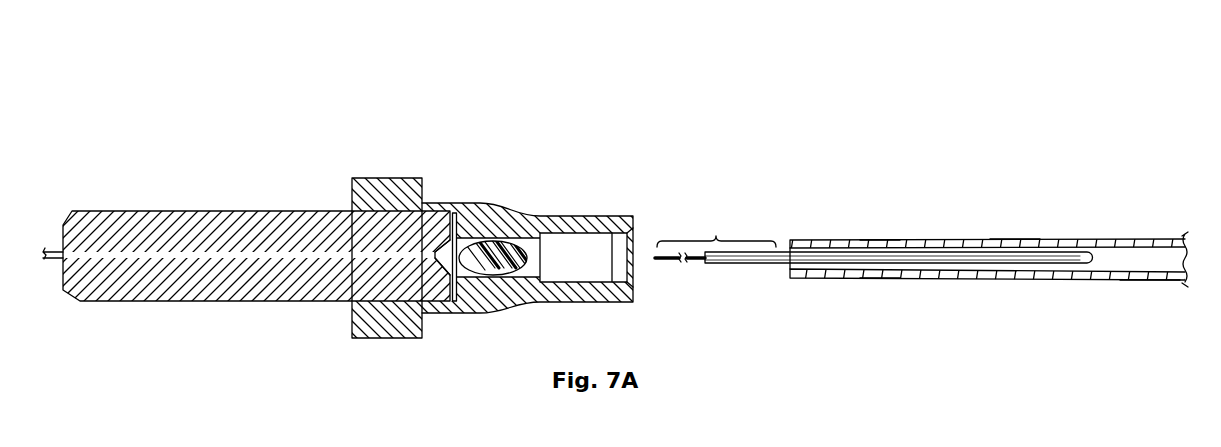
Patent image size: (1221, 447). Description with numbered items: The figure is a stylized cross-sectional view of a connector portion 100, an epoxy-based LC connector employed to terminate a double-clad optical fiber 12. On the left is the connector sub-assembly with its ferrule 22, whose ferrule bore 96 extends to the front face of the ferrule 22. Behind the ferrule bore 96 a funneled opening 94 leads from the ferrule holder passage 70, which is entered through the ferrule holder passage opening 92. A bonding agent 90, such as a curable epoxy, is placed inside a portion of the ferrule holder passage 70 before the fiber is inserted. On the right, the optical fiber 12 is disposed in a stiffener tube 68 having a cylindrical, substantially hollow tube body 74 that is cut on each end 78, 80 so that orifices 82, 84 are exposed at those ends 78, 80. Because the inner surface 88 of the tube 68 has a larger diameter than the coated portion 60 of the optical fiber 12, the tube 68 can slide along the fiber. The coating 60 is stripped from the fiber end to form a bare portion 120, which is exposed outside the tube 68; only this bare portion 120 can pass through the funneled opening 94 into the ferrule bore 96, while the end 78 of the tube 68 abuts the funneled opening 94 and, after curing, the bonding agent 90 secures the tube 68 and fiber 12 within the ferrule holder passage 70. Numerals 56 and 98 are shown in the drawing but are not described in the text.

The connector portion 100 is at (1114, 140).
The double-clad fiber 12 is at (993, 310).
The ferrule 22 is at (167, 293).
The housing 56 is at (480, 202).
The coated portion 60 is at (727, 265).
The tube 68 is at (876, 233).
The ferrule holder passage 70 is at (525, 242).
The tube body 74 is at (876, 288).
The end 78 is at (793, 288).
The end 80 is at (1151, 298).
The orifice 82 is at (790, 268).
The orifice 84 is at (1189, 262).
The inner surface 88 is at (1012, 247).
The bonding agent 90 is at (490, 273).
The ferrule holder passage opening 92 is at (637, 230).
The funneled opening 94 is at (442, 263).
The ferrule bore 96 is at (114, 250).
The end wall 98 is at (453, 215).
The bare portion 120 is at (665, 263).